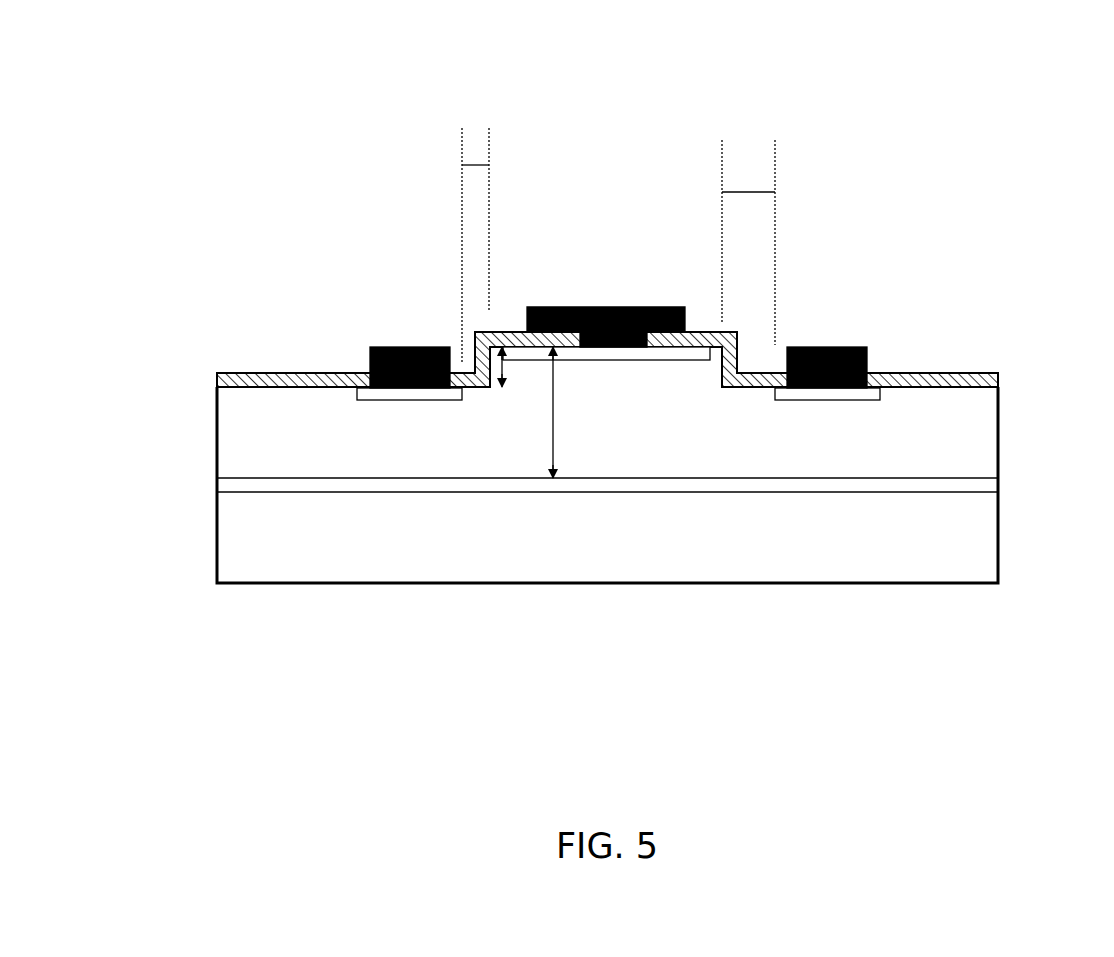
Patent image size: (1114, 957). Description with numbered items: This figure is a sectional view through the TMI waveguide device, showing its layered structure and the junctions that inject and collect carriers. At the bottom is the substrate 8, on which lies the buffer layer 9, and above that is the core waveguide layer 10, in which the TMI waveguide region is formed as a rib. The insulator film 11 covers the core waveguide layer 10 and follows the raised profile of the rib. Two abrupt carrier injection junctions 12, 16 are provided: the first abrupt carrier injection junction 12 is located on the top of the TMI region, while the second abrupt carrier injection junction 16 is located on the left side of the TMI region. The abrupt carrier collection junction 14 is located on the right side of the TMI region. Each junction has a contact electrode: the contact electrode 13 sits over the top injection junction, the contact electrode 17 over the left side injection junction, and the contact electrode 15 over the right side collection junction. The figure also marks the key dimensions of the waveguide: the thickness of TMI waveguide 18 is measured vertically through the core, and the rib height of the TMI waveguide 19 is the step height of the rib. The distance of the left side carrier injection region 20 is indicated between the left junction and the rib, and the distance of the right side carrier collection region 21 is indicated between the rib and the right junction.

The substrate 8 is at (253, 533).
The buffer layer 9 is at (910, 478).
The core waveguide layer 10 is at (267, 428).
The insulator film 11 is at (265, 375).
The abrupt carrier injection junction 12 is at (684, 360).
The contact electrode 13 is at (605, 307).
The abrupt carrier collection junction 14 is at (801, 400).
The contact electrode 15 is at (827, 347).
The abrupt carrier injection junction 16 is at (410, 400).
The contact electrode 17 is at (408, 347).
The thickness of TMI waveguide 18 is at (557, 413).
The rib height of TMI waveguide 19 is at (491, 373).
The distance of left side carrier injection region 20 is at (476, 165).
The distance of right side carrier collection region 21 is at (748, 192).